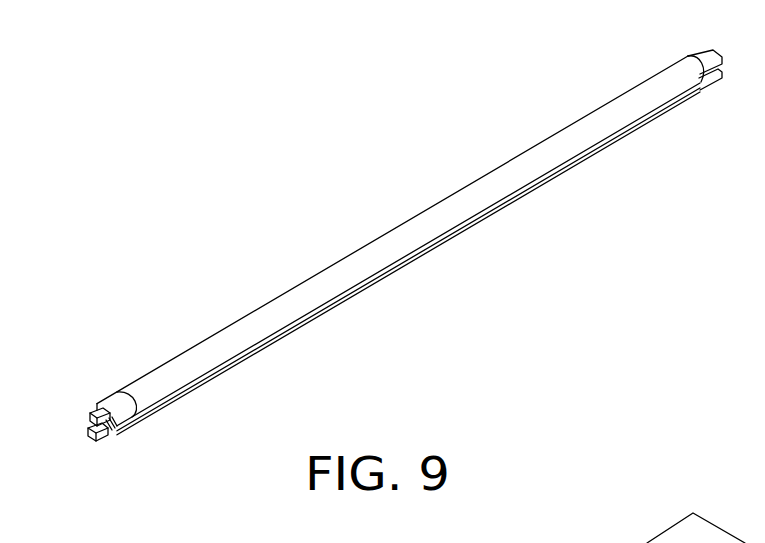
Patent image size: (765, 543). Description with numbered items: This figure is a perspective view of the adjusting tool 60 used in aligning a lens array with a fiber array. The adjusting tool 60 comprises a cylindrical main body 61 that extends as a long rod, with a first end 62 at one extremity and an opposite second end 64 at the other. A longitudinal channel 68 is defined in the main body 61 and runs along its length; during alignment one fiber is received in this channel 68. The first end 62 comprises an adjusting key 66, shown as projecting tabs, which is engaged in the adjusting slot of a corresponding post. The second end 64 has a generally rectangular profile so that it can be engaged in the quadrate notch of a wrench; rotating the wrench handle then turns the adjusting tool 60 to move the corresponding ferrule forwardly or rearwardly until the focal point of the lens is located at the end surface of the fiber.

The adjusting tool 60 is at (375, 262).
The cylindrical main body 61 is at (487, 197).
The first end 62 is at (118, 400).
The second end 64 is at (703, 62).
The adjusting key 66 is at (103, 438).
The longitudinal channel 68 is at (187, 395).